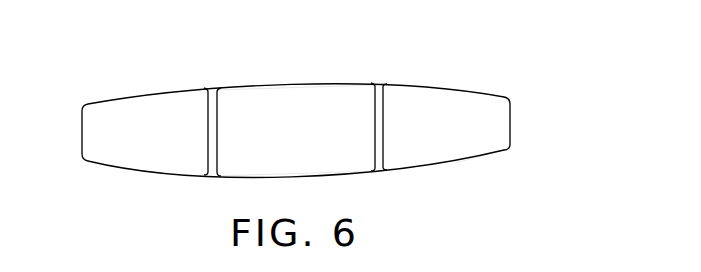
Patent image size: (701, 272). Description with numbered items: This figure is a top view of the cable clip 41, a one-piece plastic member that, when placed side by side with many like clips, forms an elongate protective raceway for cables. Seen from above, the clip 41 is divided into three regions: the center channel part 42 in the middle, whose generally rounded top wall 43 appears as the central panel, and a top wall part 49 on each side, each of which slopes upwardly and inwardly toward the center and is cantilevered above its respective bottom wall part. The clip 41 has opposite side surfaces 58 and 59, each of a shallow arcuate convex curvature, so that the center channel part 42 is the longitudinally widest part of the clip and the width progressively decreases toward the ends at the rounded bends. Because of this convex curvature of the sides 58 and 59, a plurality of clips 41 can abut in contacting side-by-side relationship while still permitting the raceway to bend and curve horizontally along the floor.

The cable clip 41 is at (158, 186).
The center channel part 42 is at (278, 157).
The top wall 43 is at (358, 167).
The top wall part 49 is at (122, 155).
The side surface 58 is at (442, 86).
The side surface 59 is at (455, 163).